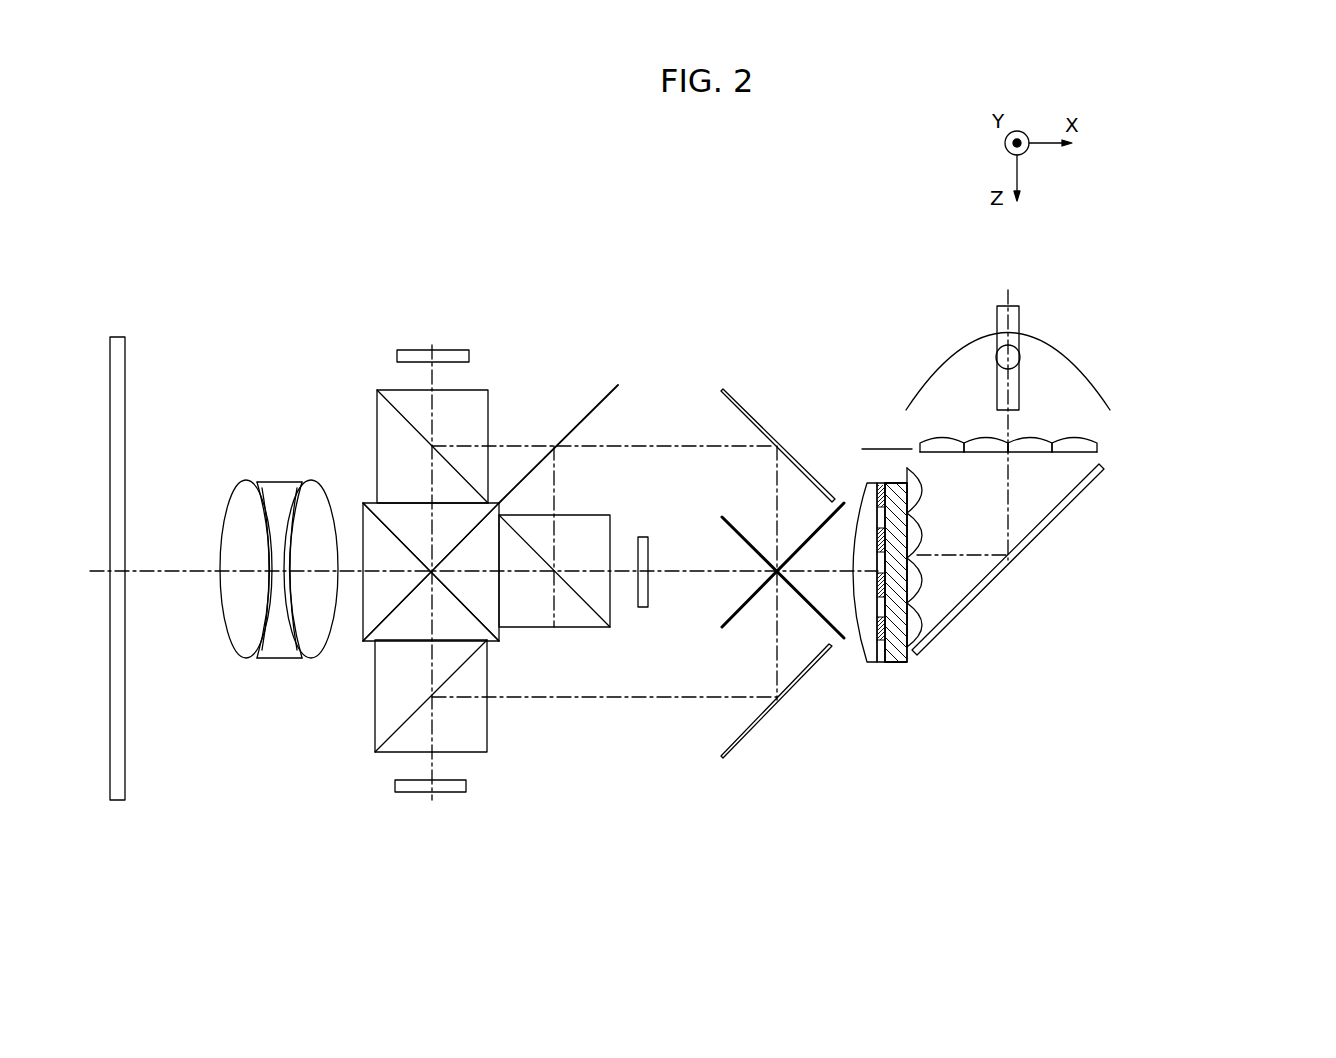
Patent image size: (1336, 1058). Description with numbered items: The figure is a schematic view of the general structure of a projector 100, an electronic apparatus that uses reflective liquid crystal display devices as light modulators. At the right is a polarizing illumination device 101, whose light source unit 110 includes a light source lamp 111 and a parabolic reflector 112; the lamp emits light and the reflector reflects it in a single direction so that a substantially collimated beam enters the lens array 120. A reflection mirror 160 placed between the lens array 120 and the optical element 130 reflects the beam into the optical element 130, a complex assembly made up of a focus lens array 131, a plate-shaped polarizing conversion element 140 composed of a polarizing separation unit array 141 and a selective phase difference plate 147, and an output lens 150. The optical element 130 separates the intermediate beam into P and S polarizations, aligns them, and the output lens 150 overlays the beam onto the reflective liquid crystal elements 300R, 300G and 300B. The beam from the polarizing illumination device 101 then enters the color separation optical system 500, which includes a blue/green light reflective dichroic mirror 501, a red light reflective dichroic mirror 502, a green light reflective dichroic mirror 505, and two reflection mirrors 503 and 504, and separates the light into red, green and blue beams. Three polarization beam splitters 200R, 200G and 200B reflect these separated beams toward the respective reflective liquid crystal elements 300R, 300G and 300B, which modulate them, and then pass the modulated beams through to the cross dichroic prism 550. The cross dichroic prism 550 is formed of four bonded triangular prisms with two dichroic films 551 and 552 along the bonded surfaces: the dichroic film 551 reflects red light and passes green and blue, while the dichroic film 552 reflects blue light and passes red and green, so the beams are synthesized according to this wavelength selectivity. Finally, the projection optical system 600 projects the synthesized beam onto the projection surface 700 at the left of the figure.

The projector 100 is at (1185, 172).
The polarizing illumination device 101 is at (1240, 303).
The light source unit 110 is at (1143, 310).
The light source lamp 111 is at (1020, 313).
The parabolic reflector 112 is at (1068, 350).
The lens array 120 is at (1097, 443).
The optical element 130 is at (887, 449).
The focus lens array 131 is at (905, 648).
The polarizing conversion element 140 is at (970, 755).
The polarizing separation unit array 141 is at (895, 655).
The selective phase difference plate 147 is at (882, 655).
The output lens 150 is at (858, 648).
The reflection mirror 160 is at (1000, 588).
The polarization beam splitter 200B is at (382, 388).
The polarization beam splitter 200G is at (590, 628).
The polarization beam splitter 200R is at (388, 753).
The reflective liquid crystal element 300B is at (440, 350).
The reflective liquid crystal element 300G is at (643, 607).
The reflective liquid crystal element 300R is at (455, 795).
The color separation optical system 500 is at (817, 233).
The blue/green light reflective dichroic mirror 501 is at (722, 517).
The red light reflective dichroic mirror 502 is at (845, 500).
The reflection mirror 503 is at (745, 722).
The reflection mirror 504 is at (721, 390).
The green light reflective dichroic mirror 505 is at (600, 392).
The cross dichroic prism 550 is at (363, 522).
The dichroic film 551 is at (477, 612).
The dichroic film 552 is at (467, 533).
The projection optical system 600 is at (336, 674).
The projection surface 700 is at (118, 335).